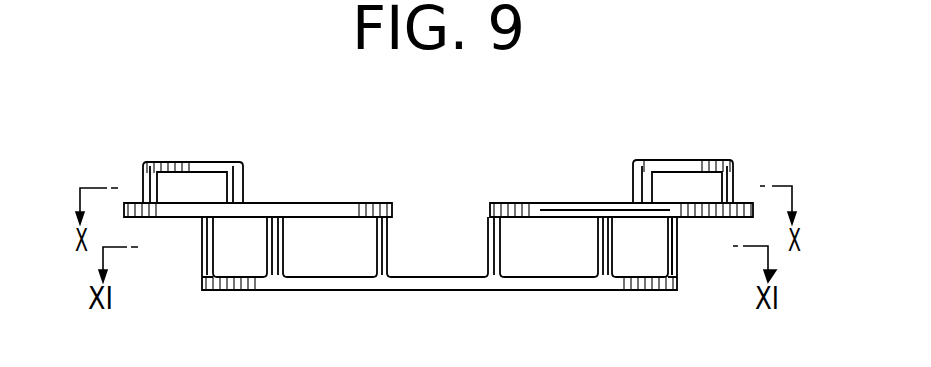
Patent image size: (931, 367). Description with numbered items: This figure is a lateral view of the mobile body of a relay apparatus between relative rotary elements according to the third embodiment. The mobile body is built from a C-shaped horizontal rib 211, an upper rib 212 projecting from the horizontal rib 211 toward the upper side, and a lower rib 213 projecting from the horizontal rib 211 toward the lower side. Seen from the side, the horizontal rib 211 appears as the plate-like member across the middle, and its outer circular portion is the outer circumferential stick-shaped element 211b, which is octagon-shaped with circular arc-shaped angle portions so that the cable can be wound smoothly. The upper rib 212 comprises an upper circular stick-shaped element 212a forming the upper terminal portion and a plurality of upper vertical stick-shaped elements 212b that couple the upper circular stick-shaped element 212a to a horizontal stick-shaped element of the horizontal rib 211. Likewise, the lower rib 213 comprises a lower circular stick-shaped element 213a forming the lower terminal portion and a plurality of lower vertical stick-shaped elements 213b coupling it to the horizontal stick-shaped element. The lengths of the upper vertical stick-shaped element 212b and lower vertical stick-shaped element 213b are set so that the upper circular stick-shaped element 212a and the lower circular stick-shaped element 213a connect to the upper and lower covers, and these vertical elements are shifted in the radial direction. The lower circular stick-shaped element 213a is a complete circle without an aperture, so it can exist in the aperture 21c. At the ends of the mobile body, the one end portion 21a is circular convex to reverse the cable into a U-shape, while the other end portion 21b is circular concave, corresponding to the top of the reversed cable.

The one end portion 21a is at (487, 210).
The other end portion 21b is at (398, 208).
The aperture 21c is at (432, 213).
The horizontal rib 211 is at (532, 202).
The outer circumferential stick-shaped element 211b is at (577, 200).
The upper rib 212 is at (675, 158).
The upper circular stick-shaped element 212a is at (652, 160).
The upper vertical stick-shaped element 212b is at (733, 187).
The lower rib 213 is at (528, 292).
The lower circular stick-shaped element 213a is at (628, 290).
The lower vertical stick-shaped element 213b is at (678, 257).